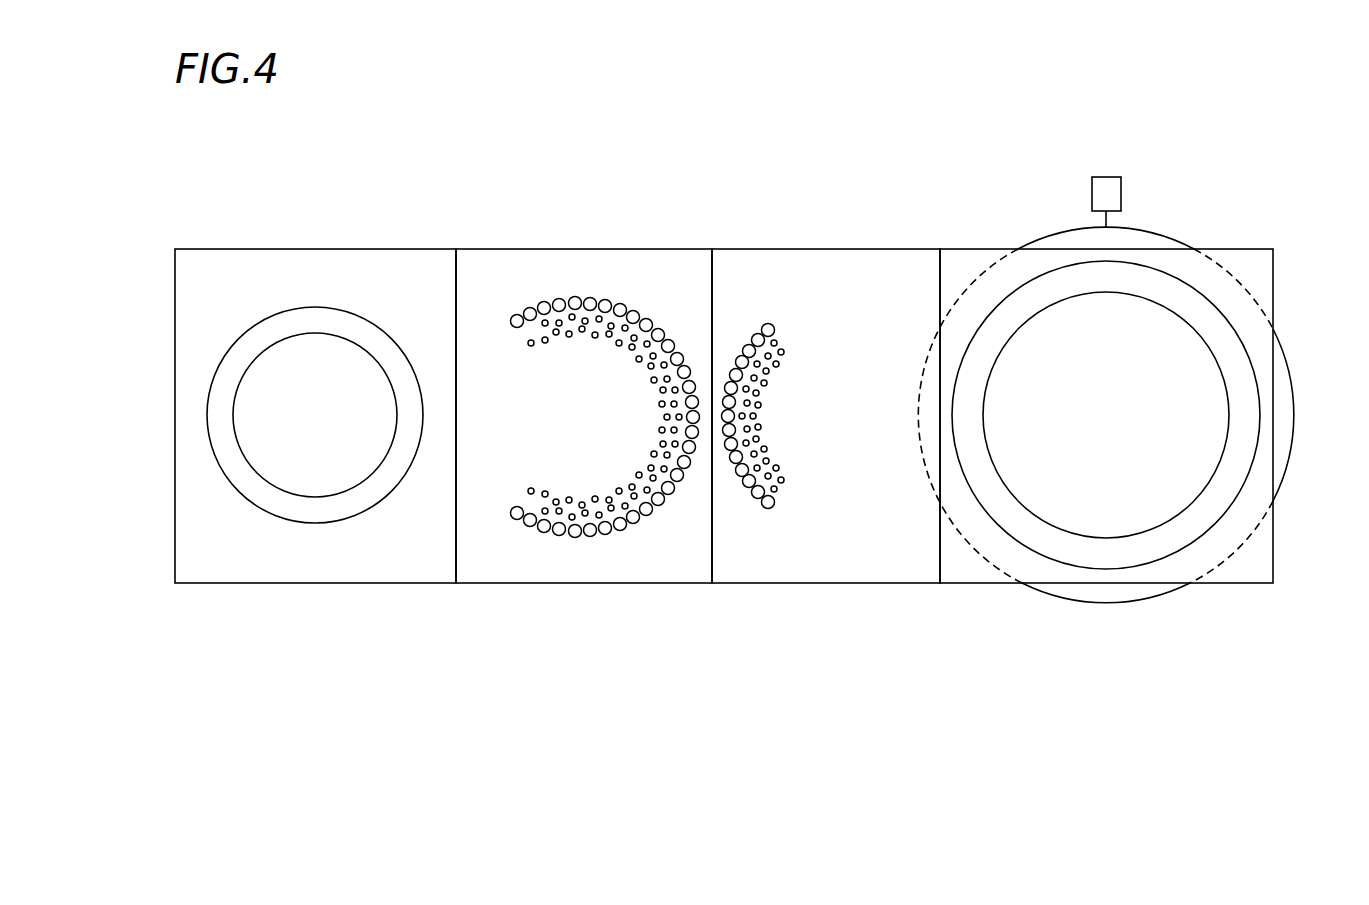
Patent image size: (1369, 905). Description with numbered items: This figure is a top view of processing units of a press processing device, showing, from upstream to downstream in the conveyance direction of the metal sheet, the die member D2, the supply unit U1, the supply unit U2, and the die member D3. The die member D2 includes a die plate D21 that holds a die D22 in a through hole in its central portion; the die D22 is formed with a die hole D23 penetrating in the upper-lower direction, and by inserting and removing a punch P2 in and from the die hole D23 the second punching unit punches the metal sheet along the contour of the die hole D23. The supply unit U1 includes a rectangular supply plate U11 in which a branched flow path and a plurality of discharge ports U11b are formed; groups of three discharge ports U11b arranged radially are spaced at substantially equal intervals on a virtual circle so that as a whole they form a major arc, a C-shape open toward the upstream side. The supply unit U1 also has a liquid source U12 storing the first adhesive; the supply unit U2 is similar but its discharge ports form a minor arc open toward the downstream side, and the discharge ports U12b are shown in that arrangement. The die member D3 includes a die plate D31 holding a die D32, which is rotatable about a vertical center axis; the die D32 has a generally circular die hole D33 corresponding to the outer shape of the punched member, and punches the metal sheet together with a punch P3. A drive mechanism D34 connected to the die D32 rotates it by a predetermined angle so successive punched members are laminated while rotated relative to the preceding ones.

The die member D2 is at (302, 649).
The die plate D21 is at (368, 583).
The die D22 is at (261, 508).
The die hole D23 is at (315, 346).
The punch P2 is at (278, 340).
The supply unit U1 is at (525, 649).
The supply plate U11 is at (598, 583).
The discharge ports U11b is at (542, 303).
The supply unit U2 is at (772, 649).
The liquid source U12 is at (847, 583).
The dot pattern of second unit U12b is at (765, 324).
The die member D3 is at (1045, 649).
The die plate D31 is at (1235, 583).
The die D32 is at (997, 524).
The die hole D33 is at (1100, 365).
The punch P3 is at (1015, 323).
The drive mechanism D34 is at (1121, 190).